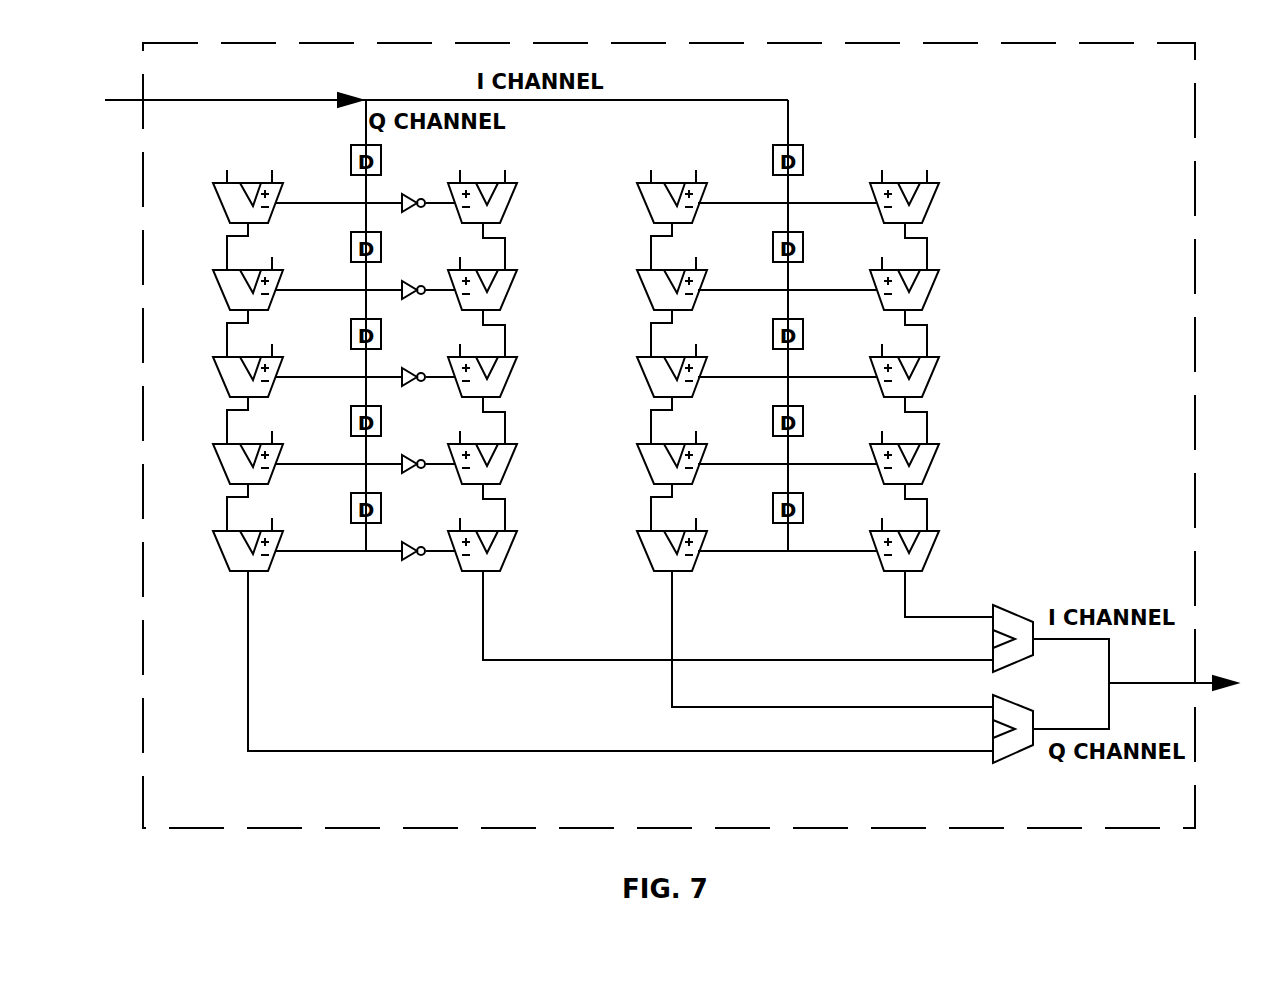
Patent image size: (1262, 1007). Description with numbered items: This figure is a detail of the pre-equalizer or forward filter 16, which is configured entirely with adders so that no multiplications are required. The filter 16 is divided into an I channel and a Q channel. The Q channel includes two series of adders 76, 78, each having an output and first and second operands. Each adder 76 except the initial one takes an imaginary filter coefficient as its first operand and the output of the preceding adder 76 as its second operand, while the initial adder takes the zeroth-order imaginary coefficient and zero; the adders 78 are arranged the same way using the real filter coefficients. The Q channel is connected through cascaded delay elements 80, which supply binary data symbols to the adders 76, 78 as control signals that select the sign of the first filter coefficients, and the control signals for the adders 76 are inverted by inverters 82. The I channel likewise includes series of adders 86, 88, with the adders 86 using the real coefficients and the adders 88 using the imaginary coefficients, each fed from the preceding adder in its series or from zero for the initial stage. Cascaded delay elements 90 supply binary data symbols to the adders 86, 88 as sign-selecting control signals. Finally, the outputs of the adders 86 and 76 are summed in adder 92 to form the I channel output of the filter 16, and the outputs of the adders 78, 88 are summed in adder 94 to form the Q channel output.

The pre-equalizer 16 is at (1195, 196).
The adder 76 is at (511, 546).
The adder 78 is at (220, 547).
The delay element 80 is at (351, 511).
The inverter 82 is at (412, 526).
The adder 86 is at (933, 546).
The adder 88 is at (644, 547).
The delay element 90 is at (773, 511).
The adder 92 is at (1005, 608).
The adder 94 is at (1010, 758).